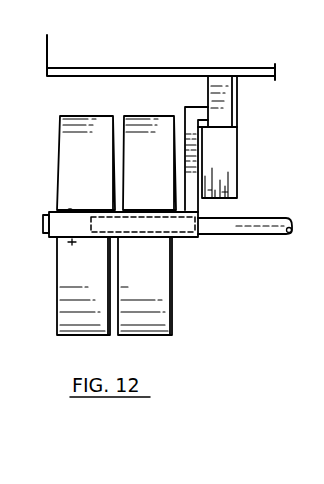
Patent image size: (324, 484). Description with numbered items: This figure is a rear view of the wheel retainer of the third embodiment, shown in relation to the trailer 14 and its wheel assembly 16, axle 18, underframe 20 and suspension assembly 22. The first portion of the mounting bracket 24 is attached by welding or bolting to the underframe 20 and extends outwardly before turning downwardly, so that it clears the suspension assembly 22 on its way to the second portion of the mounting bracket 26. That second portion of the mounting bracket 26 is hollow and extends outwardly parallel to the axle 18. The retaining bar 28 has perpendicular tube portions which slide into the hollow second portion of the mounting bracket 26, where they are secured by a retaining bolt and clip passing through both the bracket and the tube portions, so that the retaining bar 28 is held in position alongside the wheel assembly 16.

The trailer 14 is at (185, 60).
The wheel assembly 16 is at (172, 324).
The axle 18 is at (265, 237).
The underframe 20 is at (234, 96).
The suspension assembly 22 is at (228, 162).
The first portion of the mounting bracket 24 is at (192, 186).
The second portion of the mounting bracket 26 is at (152, 240).
The retaining bar 28 is at (43, 222).